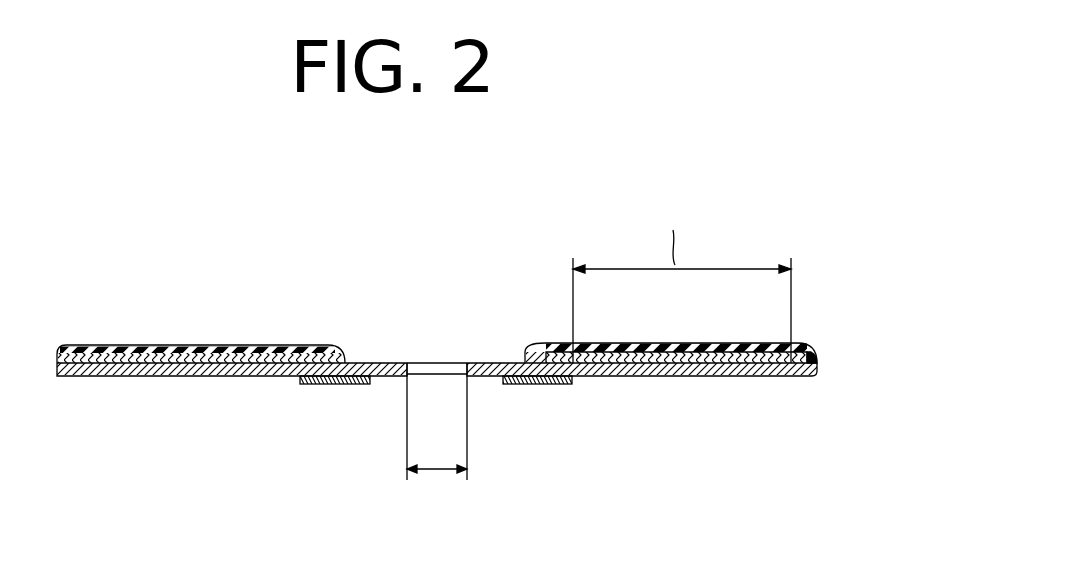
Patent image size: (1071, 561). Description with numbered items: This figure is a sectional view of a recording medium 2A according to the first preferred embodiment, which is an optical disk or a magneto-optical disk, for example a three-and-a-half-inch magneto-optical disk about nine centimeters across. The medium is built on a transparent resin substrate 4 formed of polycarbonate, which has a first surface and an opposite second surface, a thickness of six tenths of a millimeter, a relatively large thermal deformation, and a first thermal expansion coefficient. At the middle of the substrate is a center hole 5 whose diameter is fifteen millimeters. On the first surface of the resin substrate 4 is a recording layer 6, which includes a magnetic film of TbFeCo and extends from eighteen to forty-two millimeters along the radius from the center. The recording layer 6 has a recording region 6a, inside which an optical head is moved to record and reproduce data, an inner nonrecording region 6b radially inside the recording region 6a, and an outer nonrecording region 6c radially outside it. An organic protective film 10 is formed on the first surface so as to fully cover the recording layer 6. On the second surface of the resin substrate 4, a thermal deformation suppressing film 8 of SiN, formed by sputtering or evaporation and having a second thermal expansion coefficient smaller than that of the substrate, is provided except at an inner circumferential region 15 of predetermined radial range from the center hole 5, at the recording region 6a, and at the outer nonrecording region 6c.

The recording medium 2A is at (432, 307).
The resin substrate 4 is at (145, 377).
The center hole 5 is at (411, 362).
The recording layer 6 is at (138, 347).
The recording region 6a is at (693, 347).
The inner nonrecording region 6b is at (529, 352).
The outer nonrecording region 6c is at (800, 345).
The thermal deformation suppressing film 8 is at (320, 387).
The organic protective film 10 is at (185, 347).
The inner circumferential region 15 is at (380, 377).